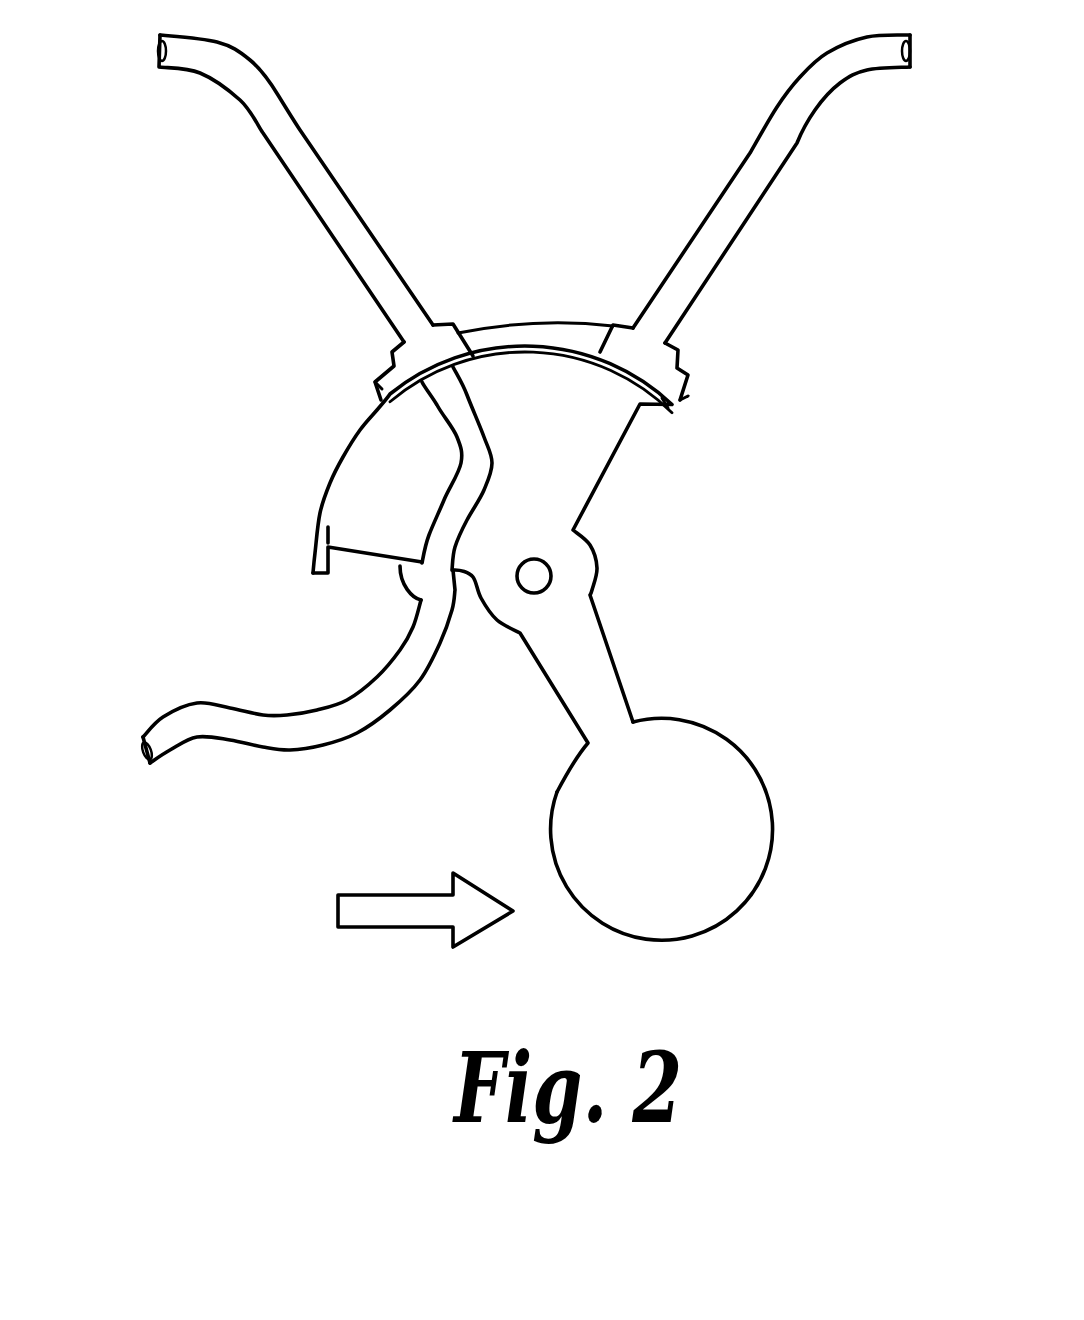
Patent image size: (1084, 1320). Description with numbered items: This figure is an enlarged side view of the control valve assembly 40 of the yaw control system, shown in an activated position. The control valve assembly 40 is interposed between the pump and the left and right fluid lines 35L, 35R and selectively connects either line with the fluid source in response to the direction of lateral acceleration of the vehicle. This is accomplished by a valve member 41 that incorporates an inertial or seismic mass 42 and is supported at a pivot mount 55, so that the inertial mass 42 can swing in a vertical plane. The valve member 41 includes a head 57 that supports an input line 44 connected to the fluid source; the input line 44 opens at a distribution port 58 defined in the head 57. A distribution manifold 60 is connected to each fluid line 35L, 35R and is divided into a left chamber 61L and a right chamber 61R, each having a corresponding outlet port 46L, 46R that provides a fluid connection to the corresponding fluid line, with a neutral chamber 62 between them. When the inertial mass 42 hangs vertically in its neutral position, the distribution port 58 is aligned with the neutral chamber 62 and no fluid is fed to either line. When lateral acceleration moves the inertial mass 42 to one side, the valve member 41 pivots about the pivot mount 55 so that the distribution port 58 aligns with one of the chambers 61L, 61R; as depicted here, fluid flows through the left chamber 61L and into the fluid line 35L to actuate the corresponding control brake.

The left fluid line 35L is at (205, 38).
The right fluid line 35R is at (855, 80).
The control valve assembly 40 is at (778, 555).
The valve member 41 is at (577, 670).
The inertial mass 42 is at (710, 778).
The input line 44 is at (322, 723).
The left outlet port 46L is at (405, 345).
The right outlet port 46R is at (668, 342).
The pivot mount 55 is at (537, 576).
The head 57 is at (333, 563).
The distribution port 58 is at (422, 393).
The distribution manifold 60 is at (692, 378).
The left chamber 61L is at (380, 400).
The right chamber 61R is at (665, 410).
The neutral chamber 62 is at (498, 332).